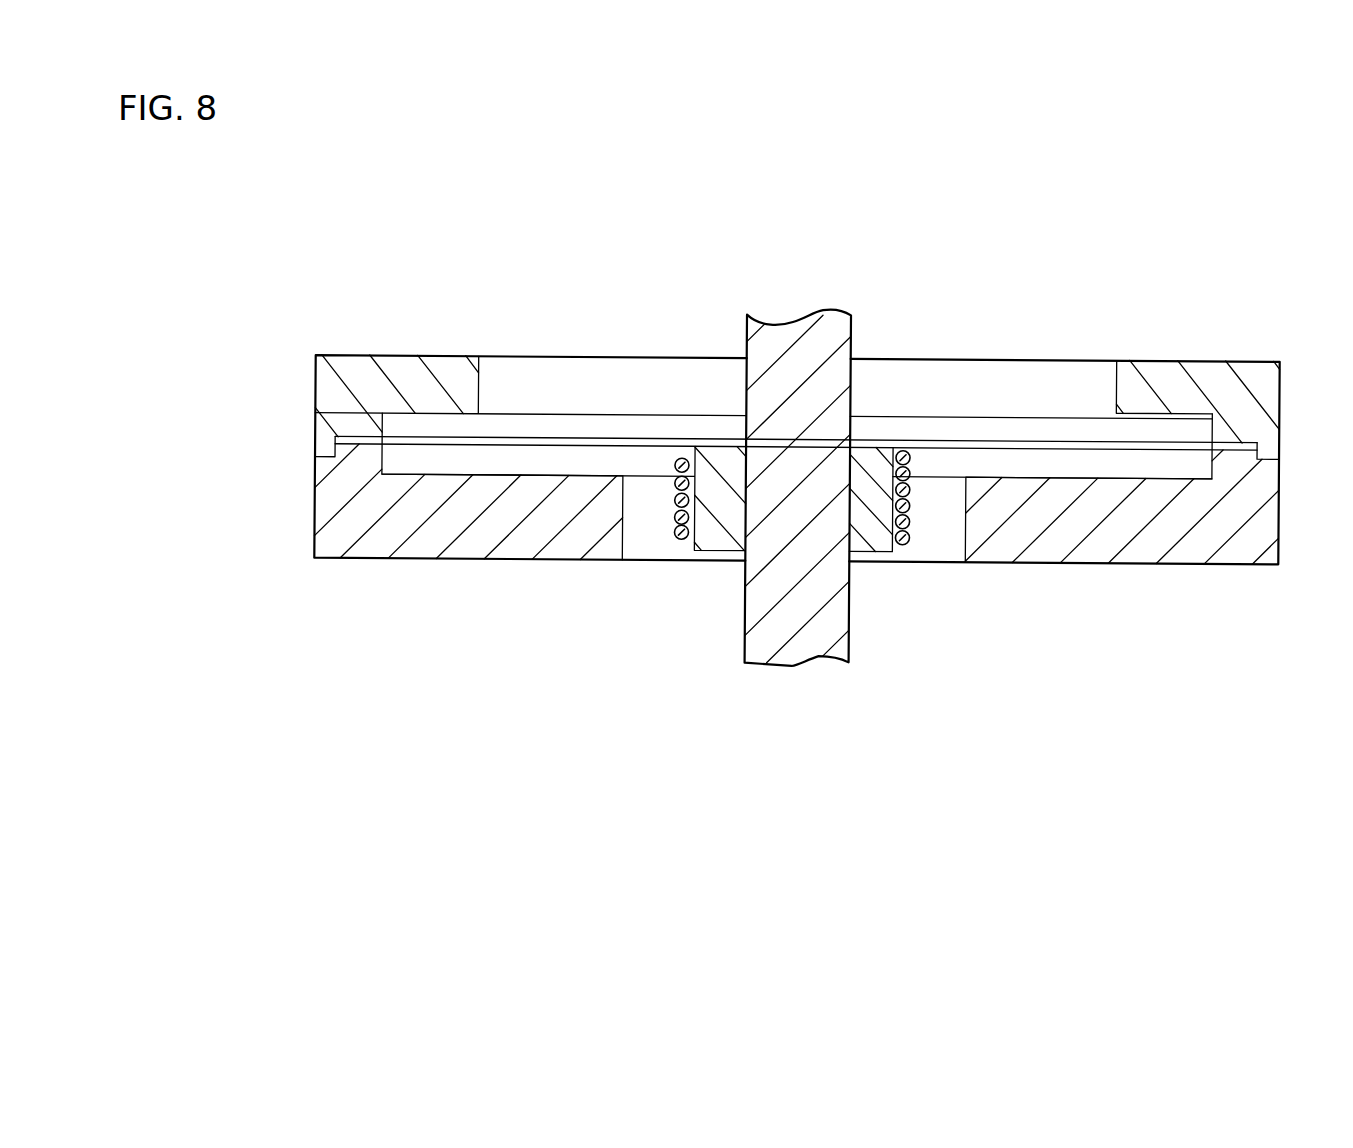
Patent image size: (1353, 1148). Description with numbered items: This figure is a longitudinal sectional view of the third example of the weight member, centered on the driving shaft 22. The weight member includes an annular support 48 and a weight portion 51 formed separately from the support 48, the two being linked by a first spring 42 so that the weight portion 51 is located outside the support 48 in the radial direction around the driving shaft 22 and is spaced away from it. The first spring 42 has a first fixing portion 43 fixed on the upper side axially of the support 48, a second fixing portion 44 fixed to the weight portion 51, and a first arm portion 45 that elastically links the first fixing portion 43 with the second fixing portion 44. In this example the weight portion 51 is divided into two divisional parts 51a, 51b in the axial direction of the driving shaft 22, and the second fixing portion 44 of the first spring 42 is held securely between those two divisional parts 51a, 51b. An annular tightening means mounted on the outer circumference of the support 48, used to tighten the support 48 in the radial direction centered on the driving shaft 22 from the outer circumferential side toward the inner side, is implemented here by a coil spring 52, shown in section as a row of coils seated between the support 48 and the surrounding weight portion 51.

The driving shaft 22 is at (805, 620).
The first spring 42 is at (727, 202).
The first fixing portion 43 is at (713, 443).
The second fixing portion 44 is at (353, 437).
The first arm portion 45 is at (528, 440).
The support 48 is at (872, 530).
The weight portion 51 is at (430, 782).
The divisional part 51a is at (316, 430).
The divisional part 51b is at (385, 540).
The coil spring 52 is at (673, 527).